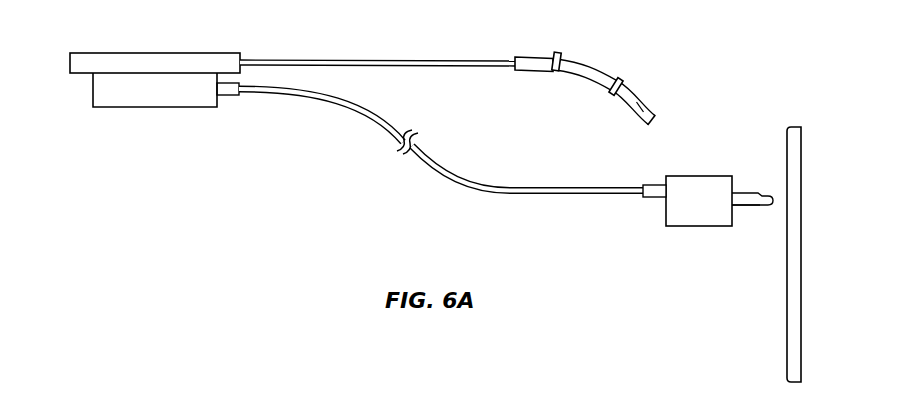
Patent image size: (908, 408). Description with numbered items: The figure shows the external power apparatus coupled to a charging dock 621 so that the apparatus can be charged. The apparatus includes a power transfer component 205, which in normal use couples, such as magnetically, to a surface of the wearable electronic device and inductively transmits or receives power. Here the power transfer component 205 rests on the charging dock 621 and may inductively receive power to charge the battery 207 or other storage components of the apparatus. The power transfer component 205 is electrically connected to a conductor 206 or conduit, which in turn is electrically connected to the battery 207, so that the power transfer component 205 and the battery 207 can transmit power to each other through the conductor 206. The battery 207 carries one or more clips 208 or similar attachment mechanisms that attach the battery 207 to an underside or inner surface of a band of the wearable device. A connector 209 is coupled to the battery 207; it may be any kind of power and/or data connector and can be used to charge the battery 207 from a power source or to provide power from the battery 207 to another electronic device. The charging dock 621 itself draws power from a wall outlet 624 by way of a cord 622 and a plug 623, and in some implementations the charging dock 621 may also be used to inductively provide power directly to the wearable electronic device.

The power transfer component 205 is at (152, 62).
The conductor 206 is at (323, 61).
The battery 207 is at (577, 74).
The clip 208 is at (558, 53).
The connector 209 is at (648, 119).
The charging dock 621 is at (155, 108).
The cord 622 is at (281, 93).
The plug 623 is at (708, 177).
The wall outlet 624 is at (795, 127).